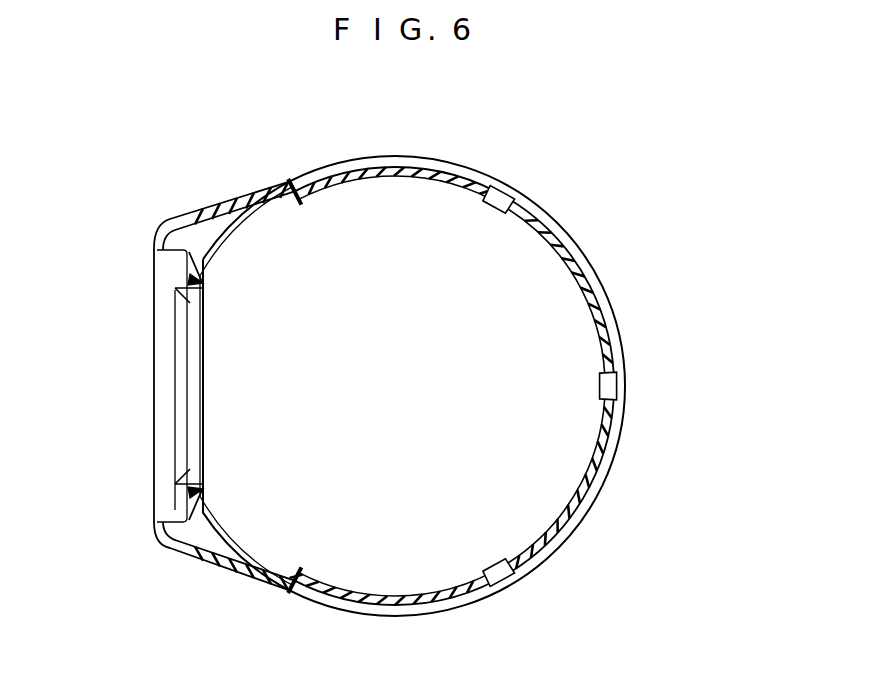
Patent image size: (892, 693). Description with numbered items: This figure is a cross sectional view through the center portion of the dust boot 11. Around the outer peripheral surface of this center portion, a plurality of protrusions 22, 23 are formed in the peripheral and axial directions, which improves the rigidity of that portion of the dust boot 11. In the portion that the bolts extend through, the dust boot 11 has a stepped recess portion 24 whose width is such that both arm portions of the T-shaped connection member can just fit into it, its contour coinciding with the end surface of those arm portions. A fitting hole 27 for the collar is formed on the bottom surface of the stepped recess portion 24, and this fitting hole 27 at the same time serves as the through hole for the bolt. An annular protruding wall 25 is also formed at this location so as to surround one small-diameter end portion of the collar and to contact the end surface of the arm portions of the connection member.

The dust boot 11 is at (435, 146).
The protrusion 22 is at (590, 272).
The protrusion 23 is at (506, 192).
The stepped recess portion 24 is at (169, 252).
The annular protruding wall 25 is at (186, 475).
The fitting hole 27 is at (197, 375).